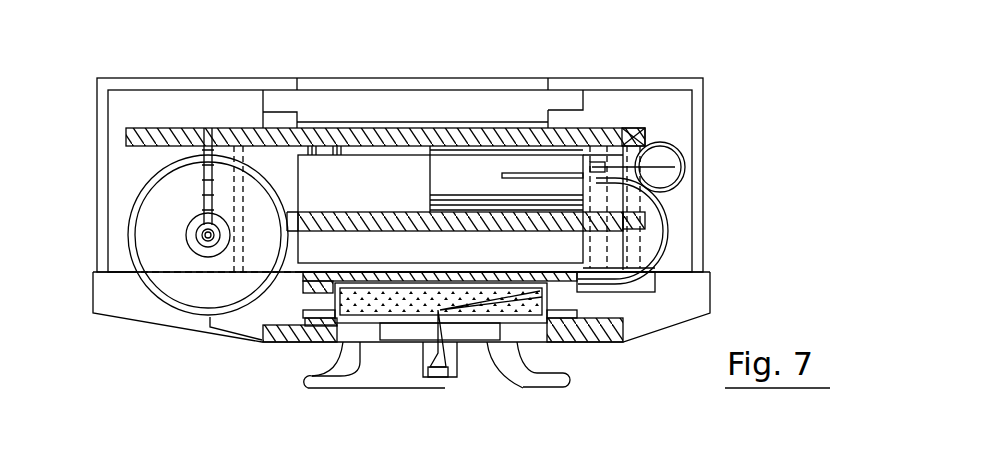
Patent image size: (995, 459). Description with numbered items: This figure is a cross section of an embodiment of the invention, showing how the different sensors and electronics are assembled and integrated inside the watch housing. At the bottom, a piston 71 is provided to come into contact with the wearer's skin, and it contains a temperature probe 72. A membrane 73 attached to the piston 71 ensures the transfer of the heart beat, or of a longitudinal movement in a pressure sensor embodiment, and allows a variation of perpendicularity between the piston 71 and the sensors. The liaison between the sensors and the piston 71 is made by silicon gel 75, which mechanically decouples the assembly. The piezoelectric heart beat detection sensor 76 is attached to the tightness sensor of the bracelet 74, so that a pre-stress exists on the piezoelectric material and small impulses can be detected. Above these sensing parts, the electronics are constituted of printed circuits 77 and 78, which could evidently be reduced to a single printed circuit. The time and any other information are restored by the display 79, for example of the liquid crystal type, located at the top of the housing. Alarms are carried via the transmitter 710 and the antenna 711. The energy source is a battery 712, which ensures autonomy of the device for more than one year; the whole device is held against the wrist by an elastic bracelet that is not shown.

The piston 71 is at (567, 377).
The temperature probe 72 is at (445, 388).
The membrane 73 is at (482, 330).
The tightness sensor of the bracelet 74 is at (343, 342).
The silicon gel 75 is at (393, 300).
The piezoelectric heart beat detection sensor 76 is at (352, 292).
The printed circuit 77 is at (643, 218).
The printed circuit 78 is at (633, 130).
The display 79 is at (396, 107).
The transmitter 710 is at (325, 180).
The antenna 711 is at (660, 165).
The battery 712 is at (162, 238).